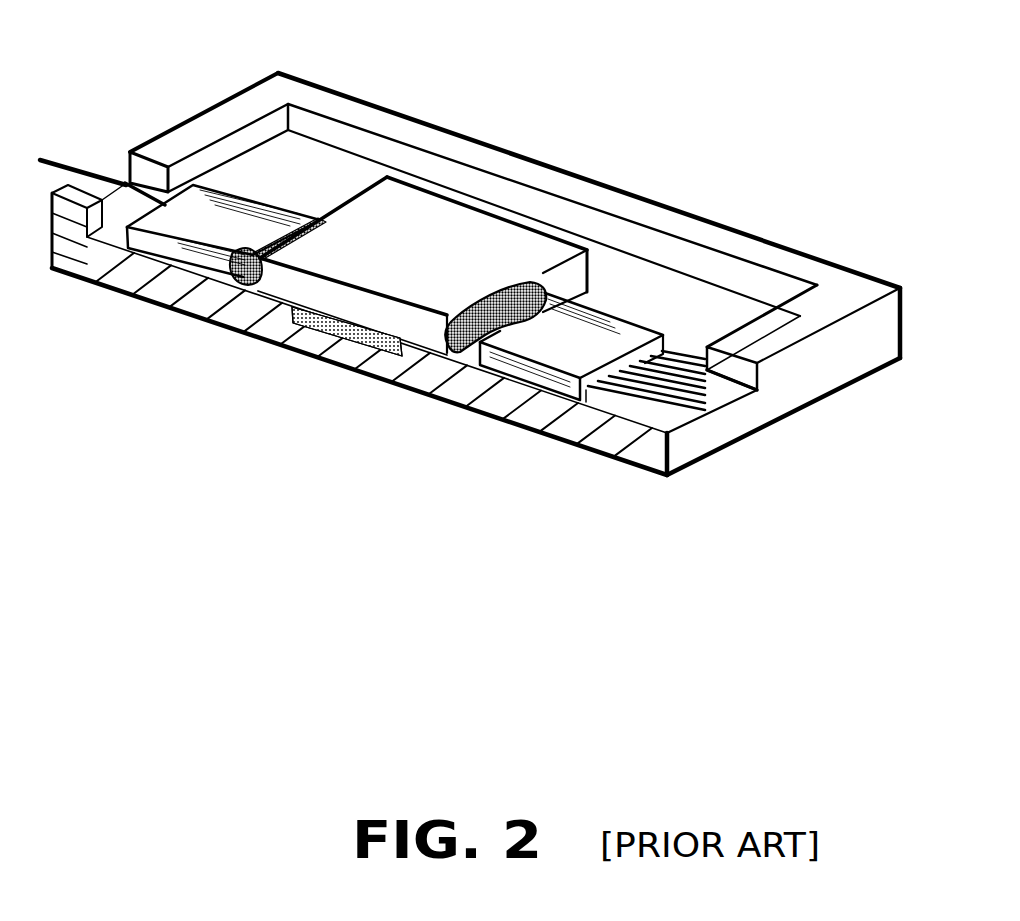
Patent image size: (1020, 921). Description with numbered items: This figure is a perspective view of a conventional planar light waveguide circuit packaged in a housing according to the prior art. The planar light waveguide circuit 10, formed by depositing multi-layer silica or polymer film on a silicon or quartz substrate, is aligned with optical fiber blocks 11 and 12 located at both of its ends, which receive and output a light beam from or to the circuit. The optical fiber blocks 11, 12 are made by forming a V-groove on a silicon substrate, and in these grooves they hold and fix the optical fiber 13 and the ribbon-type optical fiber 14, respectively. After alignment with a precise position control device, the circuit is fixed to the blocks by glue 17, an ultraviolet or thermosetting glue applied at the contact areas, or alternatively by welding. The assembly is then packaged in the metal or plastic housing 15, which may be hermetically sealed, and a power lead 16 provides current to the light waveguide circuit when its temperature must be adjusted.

The planar light waveguide circuit 10 is at (435, 255).
The optical fiber block 11 is at (223, 207).
The optical fiber block 12 is at (593, 340).
The optical fiber 13 is at (73, 157).
The ribbon-type optical fiber 14 is at (727, 368).
The housing 15 is at (820, 373).
The power lead 16 is at (347, 330).
The glue 17 is at (427, 363).